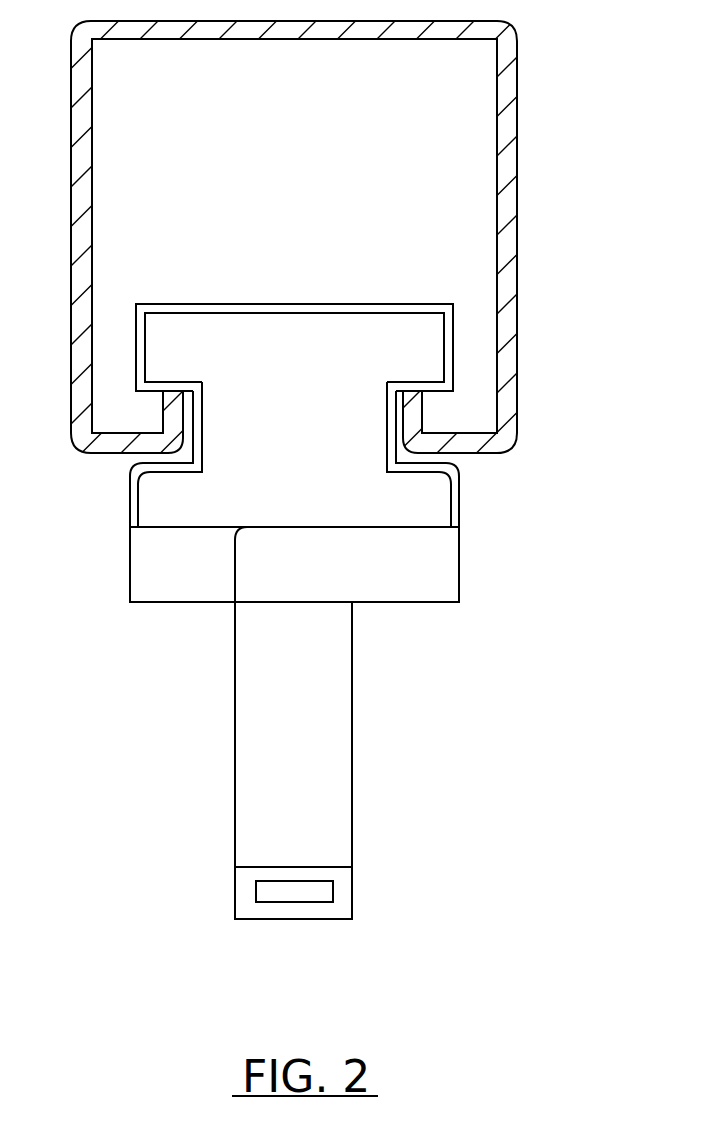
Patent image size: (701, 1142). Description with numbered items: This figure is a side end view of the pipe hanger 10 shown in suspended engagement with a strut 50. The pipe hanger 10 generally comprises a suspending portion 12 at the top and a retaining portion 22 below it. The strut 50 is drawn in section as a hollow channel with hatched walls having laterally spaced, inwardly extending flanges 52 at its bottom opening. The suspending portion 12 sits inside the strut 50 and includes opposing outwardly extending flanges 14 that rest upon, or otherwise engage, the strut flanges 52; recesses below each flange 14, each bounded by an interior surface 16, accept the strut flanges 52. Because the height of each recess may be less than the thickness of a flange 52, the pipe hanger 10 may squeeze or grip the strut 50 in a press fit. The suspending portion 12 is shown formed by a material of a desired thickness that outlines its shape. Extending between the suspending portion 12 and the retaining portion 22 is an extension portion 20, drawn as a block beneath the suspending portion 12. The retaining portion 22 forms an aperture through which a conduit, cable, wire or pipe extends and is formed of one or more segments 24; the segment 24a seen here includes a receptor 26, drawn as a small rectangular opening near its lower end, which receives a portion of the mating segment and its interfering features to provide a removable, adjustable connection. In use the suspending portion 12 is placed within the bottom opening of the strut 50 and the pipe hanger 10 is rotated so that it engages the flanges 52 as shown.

The pipe hanger 10 is at (350, 464).
The suspending portion 12 is at (295, 320).
The flange 14 is at (134, 361).
The interior surface 16 is at (203, 441).
The extension portion 20 is at (128, 558).
The retaining portion 22 is at (390, 723).
The segment 24 is at (352, 800).
The segment 24a is at (375, 723).
The receptor 26 is at (352, 896).
The strut 50 is at (512, 78).
The flange 52 is at (104, 454).